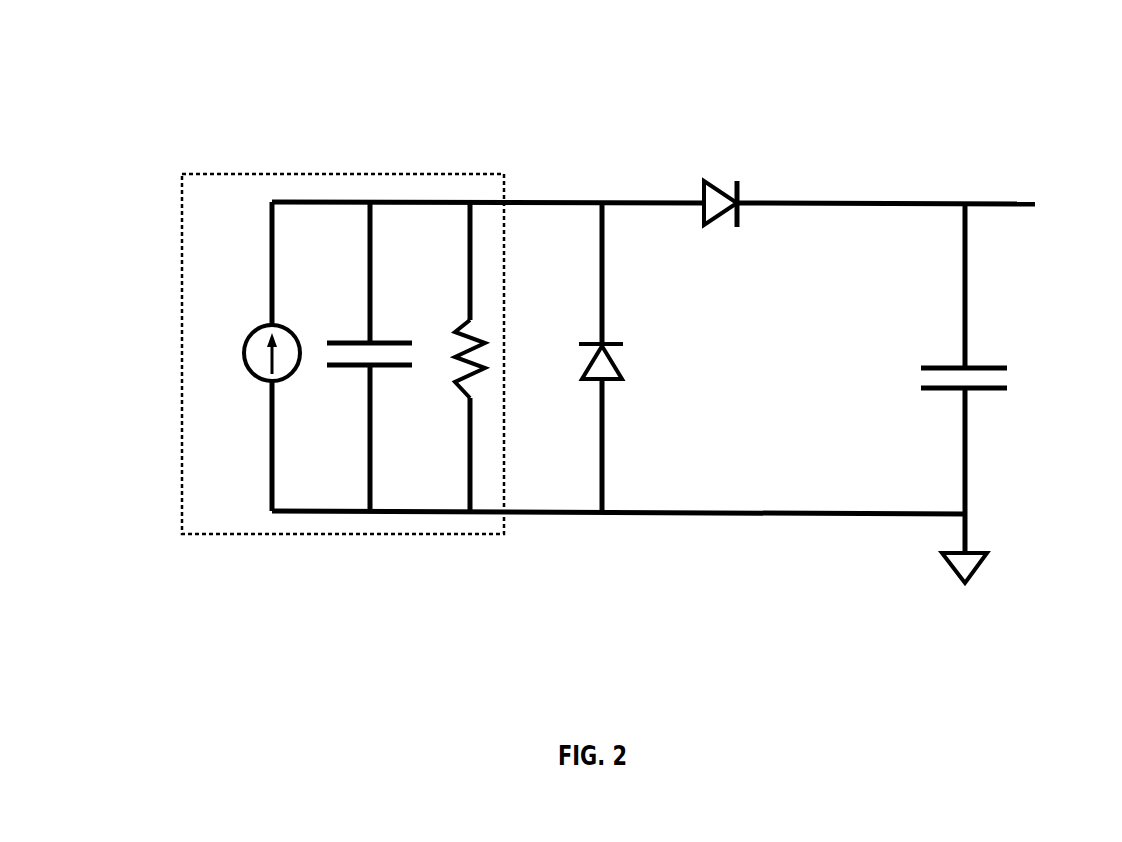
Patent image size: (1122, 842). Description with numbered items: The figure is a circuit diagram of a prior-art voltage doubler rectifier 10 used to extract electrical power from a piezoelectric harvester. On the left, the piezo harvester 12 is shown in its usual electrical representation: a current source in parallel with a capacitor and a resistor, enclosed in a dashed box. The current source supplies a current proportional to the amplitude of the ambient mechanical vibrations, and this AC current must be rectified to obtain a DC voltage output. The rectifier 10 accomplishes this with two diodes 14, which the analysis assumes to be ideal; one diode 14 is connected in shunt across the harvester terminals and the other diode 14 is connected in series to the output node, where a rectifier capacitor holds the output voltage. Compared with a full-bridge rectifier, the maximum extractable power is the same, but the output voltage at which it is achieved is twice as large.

The voltage doubler rectifier 10 is at (128, 88).
The piezo harvester 12 is at (346, 335).
The diode 14 is at (718, 180).